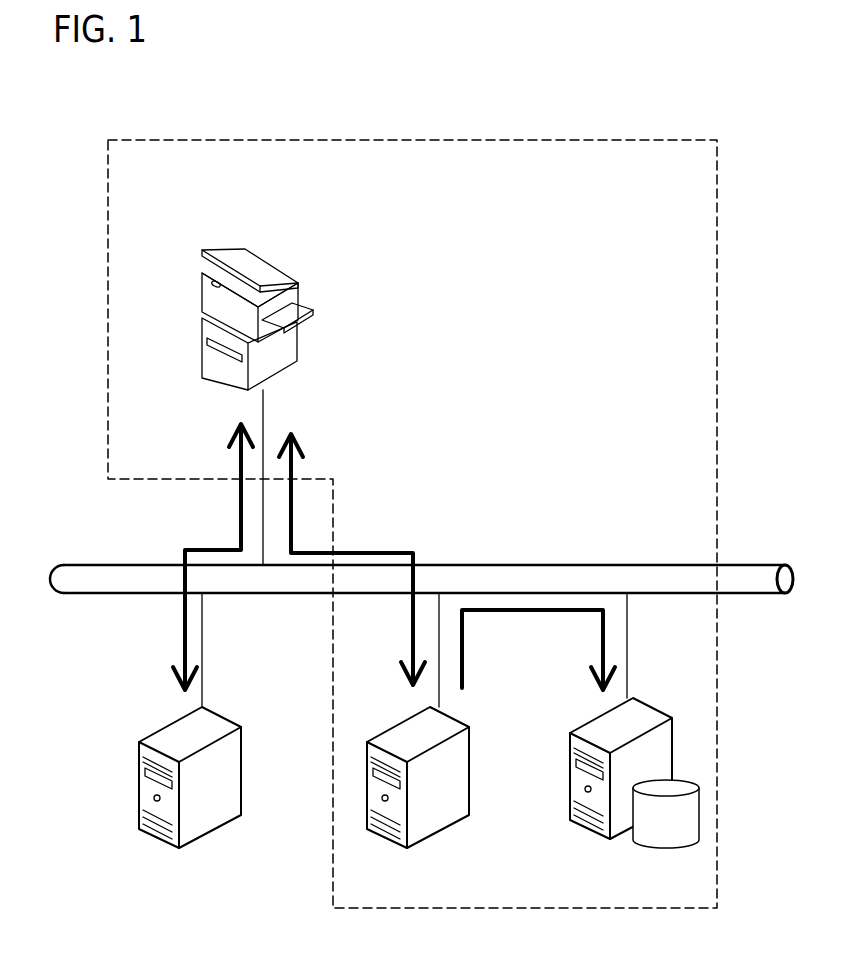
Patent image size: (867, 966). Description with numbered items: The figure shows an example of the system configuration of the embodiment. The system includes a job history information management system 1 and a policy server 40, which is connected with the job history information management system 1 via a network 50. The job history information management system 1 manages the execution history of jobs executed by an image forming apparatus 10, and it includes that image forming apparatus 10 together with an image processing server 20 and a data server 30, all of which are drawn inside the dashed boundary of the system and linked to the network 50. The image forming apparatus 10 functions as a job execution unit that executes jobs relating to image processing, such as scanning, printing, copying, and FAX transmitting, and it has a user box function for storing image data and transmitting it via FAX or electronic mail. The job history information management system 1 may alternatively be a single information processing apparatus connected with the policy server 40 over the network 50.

The job history information management system 1 is at (636, 140).
The image forming apparatus 10 is at (290, 272).
The image processing server 20 is at (420, 843).
The data server 30 is at (677, 847).
The policy server 40 is at (190, 843).
The network 50 is at (738, 565).